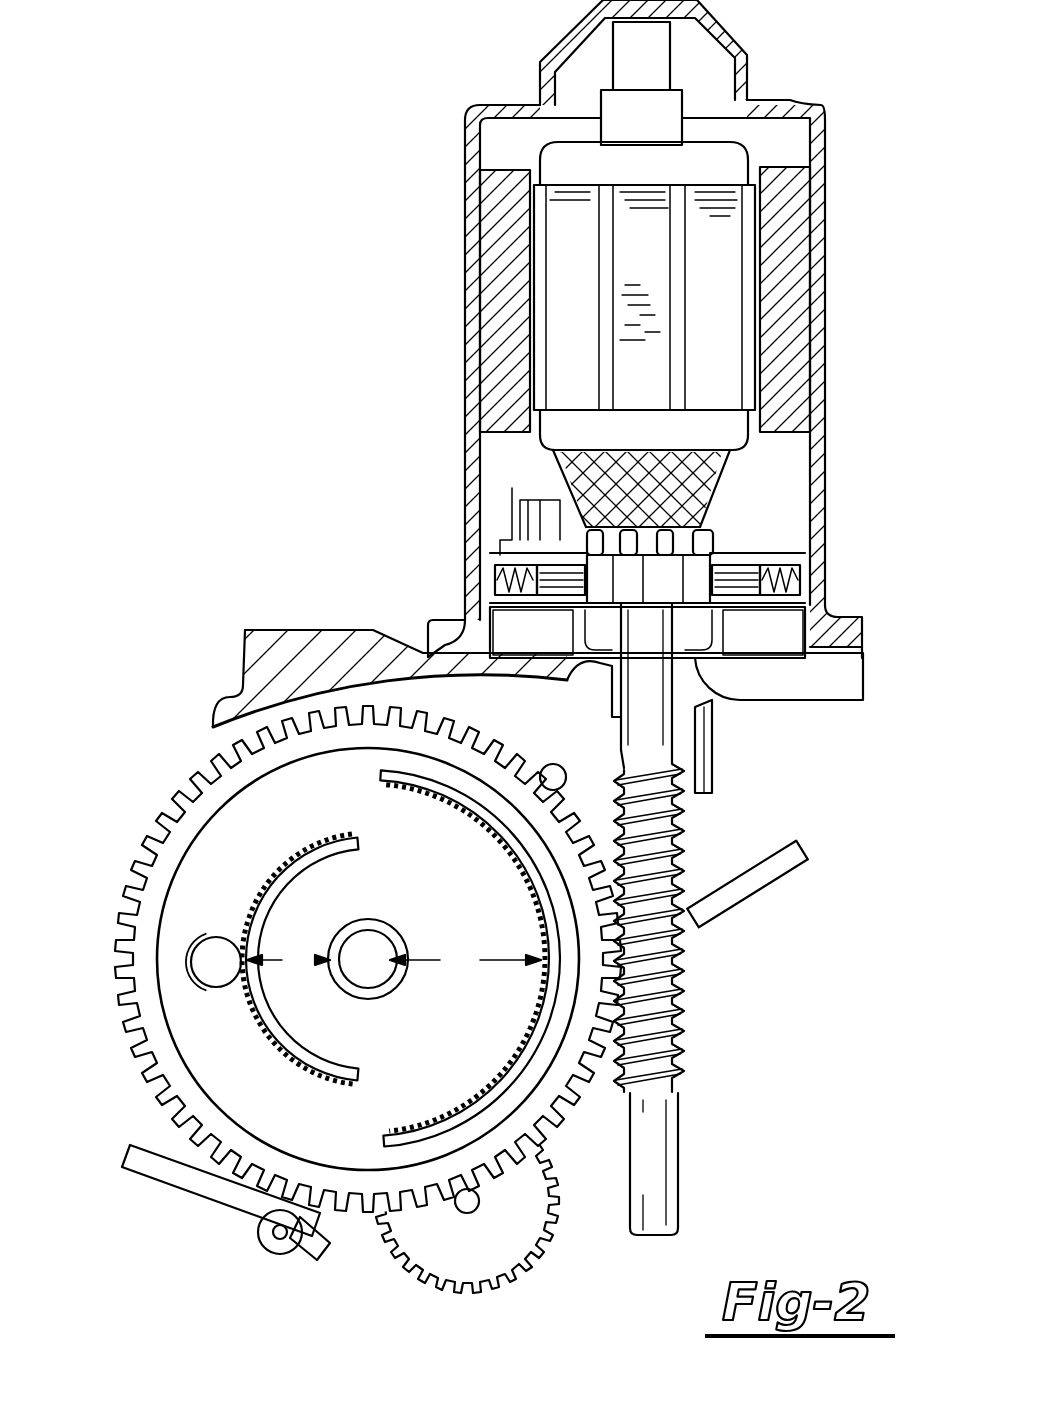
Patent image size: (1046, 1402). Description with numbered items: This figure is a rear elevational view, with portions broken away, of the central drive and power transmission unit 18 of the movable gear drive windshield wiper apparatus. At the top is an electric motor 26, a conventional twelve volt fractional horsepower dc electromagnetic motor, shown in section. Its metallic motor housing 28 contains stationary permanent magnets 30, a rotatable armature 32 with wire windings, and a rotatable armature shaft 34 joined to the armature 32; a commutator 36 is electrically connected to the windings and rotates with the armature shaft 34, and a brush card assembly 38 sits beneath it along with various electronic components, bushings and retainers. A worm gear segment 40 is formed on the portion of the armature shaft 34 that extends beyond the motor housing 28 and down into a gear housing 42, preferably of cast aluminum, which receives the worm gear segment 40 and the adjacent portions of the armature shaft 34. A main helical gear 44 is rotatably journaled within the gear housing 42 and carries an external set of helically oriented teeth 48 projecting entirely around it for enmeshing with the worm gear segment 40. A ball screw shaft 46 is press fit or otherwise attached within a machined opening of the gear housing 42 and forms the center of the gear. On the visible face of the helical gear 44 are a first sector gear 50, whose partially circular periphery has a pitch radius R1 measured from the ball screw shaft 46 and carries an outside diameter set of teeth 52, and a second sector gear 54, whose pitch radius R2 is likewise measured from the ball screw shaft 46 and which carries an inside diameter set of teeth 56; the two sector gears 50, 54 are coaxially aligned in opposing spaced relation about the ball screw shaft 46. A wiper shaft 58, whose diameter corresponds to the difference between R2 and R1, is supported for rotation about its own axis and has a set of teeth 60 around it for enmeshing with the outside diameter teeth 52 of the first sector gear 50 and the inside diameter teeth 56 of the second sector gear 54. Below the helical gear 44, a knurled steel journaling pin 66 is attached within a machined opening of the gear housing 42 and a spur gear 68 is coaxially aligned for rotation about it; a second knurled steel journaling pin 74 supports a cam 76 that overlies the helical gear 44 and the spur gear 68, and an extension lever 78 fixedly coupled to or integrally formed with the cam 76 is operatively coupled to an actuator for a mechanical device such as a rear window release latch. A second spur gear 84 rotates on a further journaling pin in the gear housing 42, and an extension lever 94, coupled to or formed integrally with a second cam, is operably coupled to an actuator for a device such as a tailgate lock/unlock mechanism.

The central drive and power transmission unit 18 is at (130, 778).
The electric motor 26 is at (458, 272).
The motor housing 28 is at (475, 357).
The permanent magnets 30 is at (487, 232).
The armature 32 is at (735, 435).
The armature shaft 34 is at (655, 740).
The commutator 36 is at (600, 585).
The brush card assembly 38 is at (805, 556).
The worm gear segment 40 is at (683, 1017).
The gear housing 42 is at (248, 632).
The main helical gear 44 is at (187, 870).
The ball screw shaft 46 is at (390, 978).
The helically oriented teeth 48 is at (128, 950).
The first sector gear 50 is at (290, 1048).
The outside diameter set of teeth 52 is at (330, 1088).
The second sector gear 54 is at (490, 828).
The inside diameter set of teeth 56 is at (525, 876).
The wiper shaft 58 is at (200, 978).
The set of teeth 60 is at (205, 968).
The journaling pin 66 is at (474, 1216).
The spur gear 68 is at (452, 1250).
The second journaling pin 74 is at (268, 1250).
The cam 76 is at (318, 1258).
The extension lever 78 is at (183, 1190).
The second spur gear 84 is at (598, 760).
The extension lever 94 is at (730, 870).